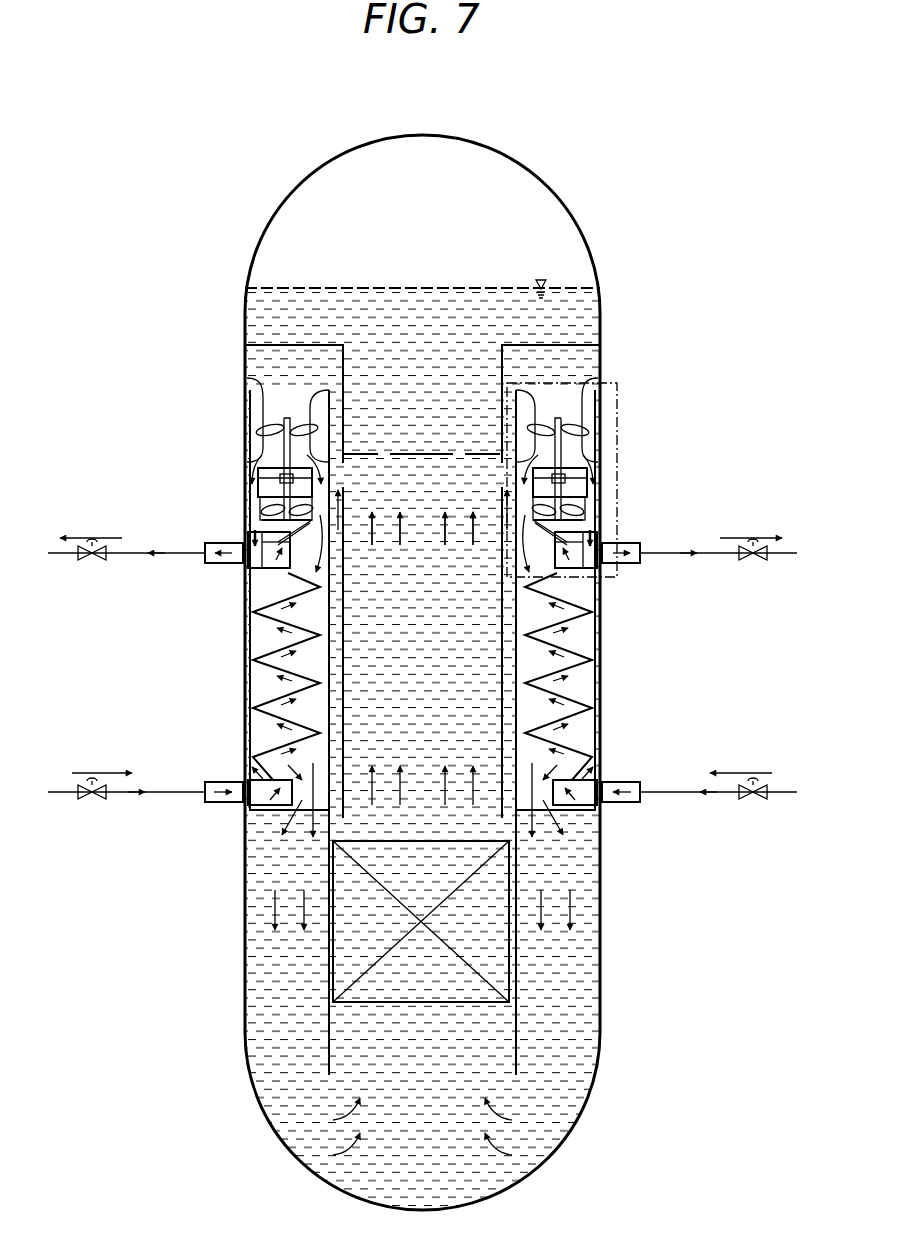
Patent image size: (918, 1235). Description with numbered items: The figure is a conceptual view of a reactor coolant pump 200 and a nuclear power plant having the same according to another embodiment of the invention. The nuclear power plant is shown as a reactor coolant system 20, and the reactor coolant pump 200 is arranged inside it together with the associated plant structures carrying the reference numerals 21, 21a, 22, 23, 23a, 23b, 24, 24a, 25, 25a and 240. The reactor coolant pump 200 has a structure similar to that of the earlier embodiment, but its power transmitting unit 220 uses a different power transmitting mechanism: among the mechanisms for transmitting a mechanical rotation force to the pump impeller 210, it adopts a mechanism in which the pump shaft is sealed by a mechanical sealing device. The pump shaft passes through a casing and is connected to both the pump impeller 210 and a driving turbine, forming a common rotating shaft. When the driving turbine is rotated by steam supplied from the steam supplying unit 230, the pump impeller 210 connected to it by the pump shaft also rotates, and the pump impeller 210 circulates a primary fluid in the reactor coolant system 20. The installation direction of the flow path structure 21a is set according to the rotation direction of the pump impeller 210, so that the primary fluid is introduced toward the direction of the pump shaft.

The reactor coolant system 20 is at (587, 166).
The reactor vessel 21 is at (283, 208).
The flow path structure 21a is at (256, 392).
The reactor core 22 is at (358, 1002).
The steam generator (heat exchanger) 23 is at (600, 690).
The feedwater inlet 23a is at (623, 803).
The steam outlet 23b is at (623, 563).
The feedwater pipe 24 is at (58, 795).
The feedwater valve 24a is at (94, 801).
The steam pipe 25 is at (58, 556).
The steam valve 25a is at (94, 562).
The reactor coolant pump 200 is at (622, 390).
The pump impeller 210 is at (583, 428).
The power transmitting unit 220 is at (576, 509).
The steam supplying unit 230 is at (547, 573).
The flow distribution block 240 is at (590, 540).